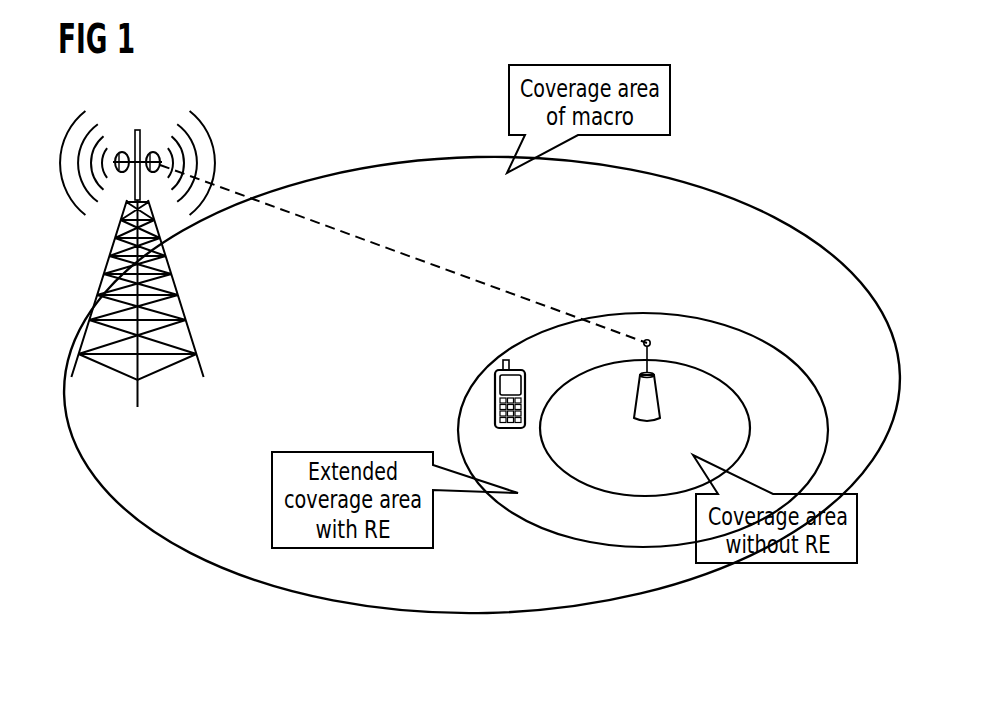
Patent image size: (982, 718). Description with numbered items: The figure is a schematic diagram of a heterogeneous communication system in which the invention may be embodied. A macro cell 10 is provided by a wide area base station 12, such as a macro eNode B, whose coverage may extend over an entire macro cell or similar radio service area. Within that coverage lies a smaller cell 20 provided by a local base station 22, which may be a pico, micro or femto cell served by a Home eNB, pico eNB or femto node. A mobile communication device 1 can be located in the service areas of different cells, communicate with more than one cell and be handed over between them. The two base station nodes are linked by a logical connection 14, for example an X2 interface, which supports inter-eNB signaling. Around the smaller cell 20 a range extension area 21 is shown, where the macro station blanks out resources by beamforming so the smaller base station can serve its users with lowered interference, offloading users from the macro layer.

The mobile communication device 1 is at (510, 430).
The macro cell 10 is at (387, 164).
The wide area base station 12 is at (111, 271).
The logical connection 14 is at (237, 192).
The smaller cell 20 is at (643, 490).
The range extension area 21 is at (646, 313).
The local base station 22 is at (634, 397).